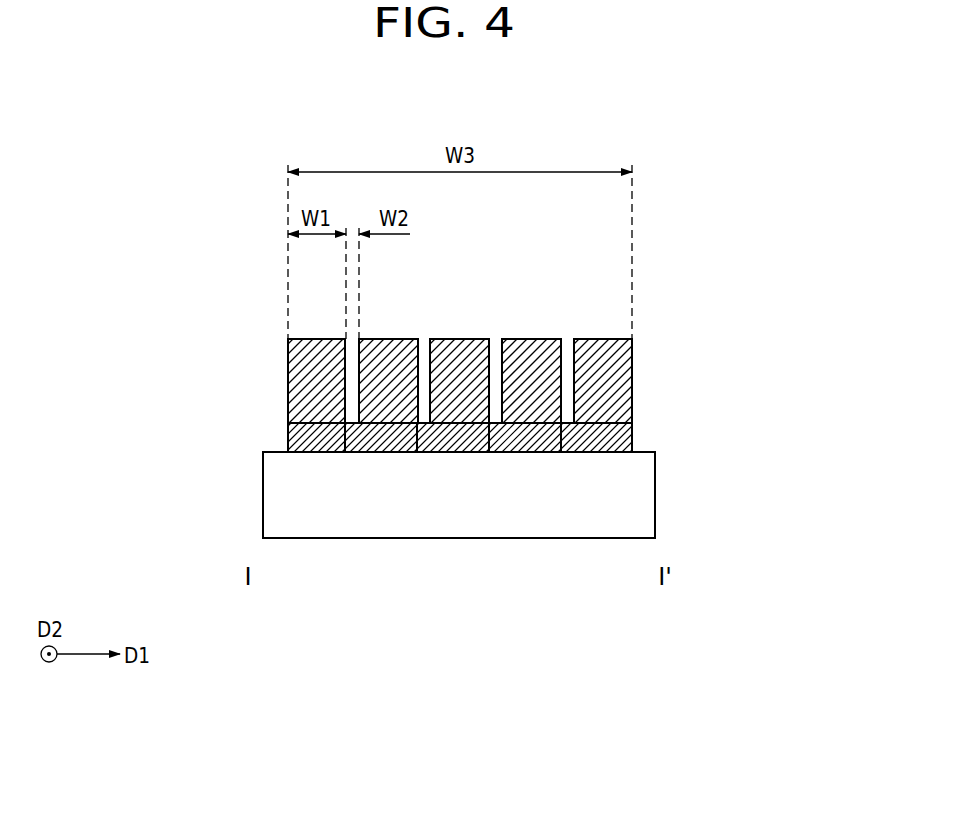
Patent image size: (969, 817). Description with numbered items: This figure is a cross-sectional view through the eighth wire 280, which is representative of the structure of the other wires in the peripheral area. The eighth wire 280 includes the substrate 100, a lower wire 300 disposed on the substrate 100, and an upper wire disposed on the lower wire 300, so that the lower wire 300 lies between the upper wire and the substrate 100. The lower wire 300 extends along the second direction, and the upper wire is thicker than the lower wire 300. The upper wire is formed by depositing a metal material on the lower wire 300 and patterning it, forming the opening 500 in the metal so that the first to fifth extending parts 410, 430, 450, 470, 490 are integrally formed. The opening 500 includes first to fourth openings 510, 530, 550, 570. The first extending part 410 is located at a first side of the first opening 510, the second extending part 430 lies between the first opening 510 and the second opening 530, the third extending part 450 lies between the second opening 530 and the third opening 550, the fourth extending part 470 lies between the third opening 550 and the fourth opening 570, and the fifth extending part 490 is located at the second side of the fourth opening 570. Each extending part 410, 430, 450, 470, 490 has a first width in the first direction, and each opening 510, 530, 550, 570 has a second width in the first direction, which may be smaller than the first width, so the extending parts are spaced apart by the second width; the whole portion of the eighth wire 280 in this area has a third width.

The substrate 100 is at (655, 492).
The eighth wire 280 is at (538, 347).
The lower wire 300 is at (632, 435).
The first extending part 410 is at (318, 339).
The second extending part 430 is at (389, 339).
The third extending part 450 is at (462, 339).
The fourth extending part 470 is at (533, 339).
The fifth extending part 490 is at (604, 339).
The opening 500 is at (451, 528).
The first opening 510 is at (352, 411).
The second opening 530 is at (424, 411).
The third opening 550 is at (496, 411).
The fourth opening 570 is at (558, 509).